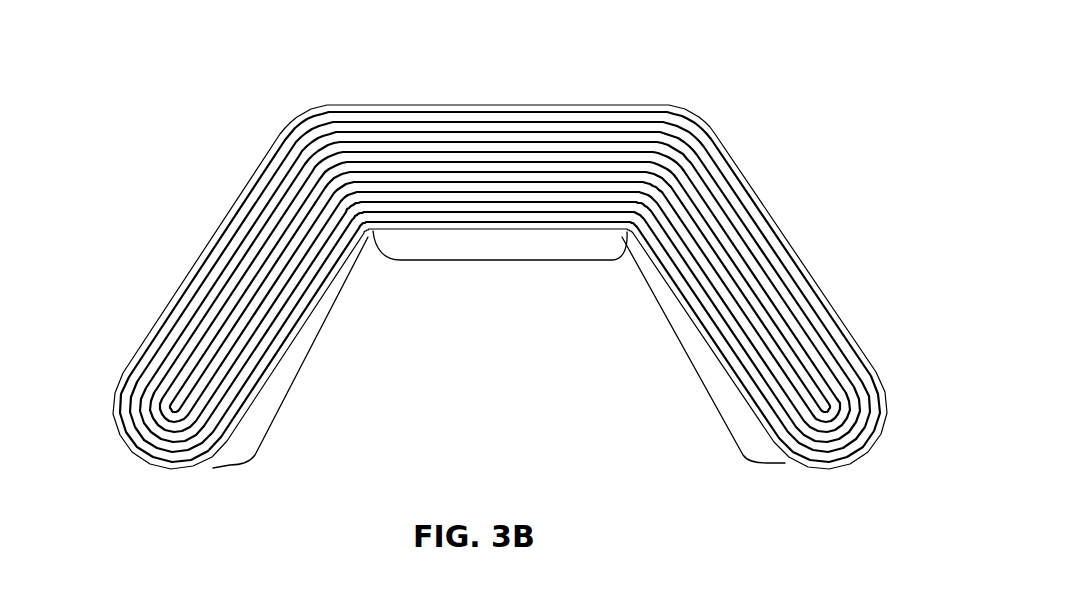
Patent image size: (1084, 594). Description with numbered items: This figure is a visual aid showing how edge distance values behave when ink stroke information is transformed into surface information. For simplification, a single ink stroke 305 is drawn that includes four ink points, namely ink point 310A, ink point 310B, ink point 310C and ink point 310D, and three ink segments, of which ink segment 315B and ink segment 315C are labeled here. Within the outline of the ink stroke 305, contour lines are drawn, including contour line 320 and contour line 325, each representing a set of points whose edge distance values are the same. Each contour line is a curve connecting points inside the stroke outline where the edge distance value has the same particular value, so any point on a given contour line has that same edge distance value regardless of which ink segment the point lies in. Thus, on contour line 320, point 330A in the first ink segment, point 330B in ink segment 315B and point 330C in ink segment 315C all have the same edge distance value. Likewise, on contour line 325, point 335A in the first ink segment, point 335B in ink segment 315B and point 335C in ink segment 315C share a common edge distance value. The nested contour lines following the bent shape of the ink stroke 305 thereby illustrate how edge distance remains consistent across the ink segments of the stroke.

The ink stroke 305 is at (199, 86).
The ink point 310A is at (146, 357).
The ink point 310B is at (347, 101).
The ink point 310C is at (698, 118).
The ink point 310D is at (852, 357).
The ink segment 315B is at (500, 267).
The ink segment 315C is at (318, 364).
The contour line 320 is at (297, 257).
The contour line 325 is at (253, 392).
The point 330A is at (266, 289).
The point 330B is at (443, 153).
The point 330C is at (793, 340).
The point 335A is at (146, 452).
The point 335B is at (560, 116).
The point 335C is at (680, 277).